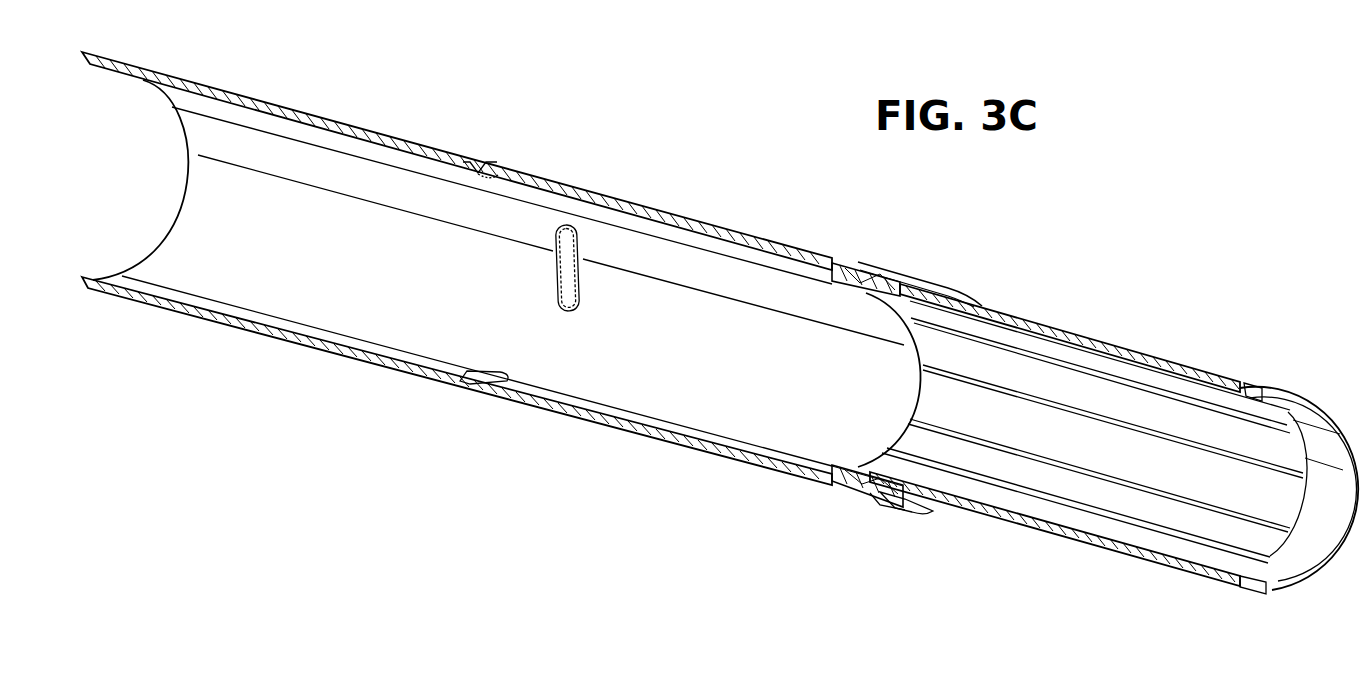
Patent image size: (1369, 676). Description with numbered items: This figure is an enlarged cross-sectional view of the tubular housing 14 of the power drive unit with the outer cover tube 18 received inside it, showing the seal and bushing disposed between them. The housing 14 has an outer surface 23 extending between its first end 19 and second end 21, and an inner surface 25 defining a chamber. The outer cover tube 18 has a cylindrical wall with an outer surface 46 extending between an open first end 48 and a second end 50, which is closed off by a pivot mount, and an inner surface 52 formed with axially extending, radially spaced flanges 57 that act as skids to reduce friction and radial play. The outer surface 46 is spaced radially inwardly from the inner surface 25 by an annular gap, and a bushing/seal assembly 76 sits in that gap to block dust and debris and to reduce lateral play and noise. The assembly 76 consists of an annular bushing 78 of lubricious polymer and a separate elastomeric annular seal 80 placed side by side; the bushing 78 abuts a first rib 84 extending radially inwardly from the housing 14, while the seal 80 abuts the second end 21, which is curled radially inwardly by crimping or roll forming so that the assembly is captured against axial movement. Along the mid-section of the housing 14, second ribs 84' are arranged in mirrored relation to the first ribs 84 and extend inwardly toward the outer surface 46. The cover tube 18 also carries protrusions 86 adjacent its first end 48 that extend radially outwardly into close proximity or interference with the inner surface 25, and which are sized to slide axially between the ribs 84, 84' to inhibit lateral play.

The housing 14 is at (493, 268).
The outer cover tube 18 is at (1031, 317).
The first end 19 is at (182, 180).
The second end 21 is at (948, 290).
The outer surface 23 is at (559, 181).
The inner surface 25 is at (636, 421).
The outer surface 46 is at (1094, 414).
The first end 48 is at (836, 466).
The second end 50 is at (1303, 397).
The inner surface 52 is at (1190, 386).
The flanges 57 is at (1107, 381).
The bushing/seal assembly 76 is at (938, 542).
The annular bushing 78 is at (873, 501).
The annular seal 80 is at (892, 509).
The first rib 84 is at (845, 381).
The second ribs 84' is at (519, 231).
The protrusion 86 is at (842, 264).